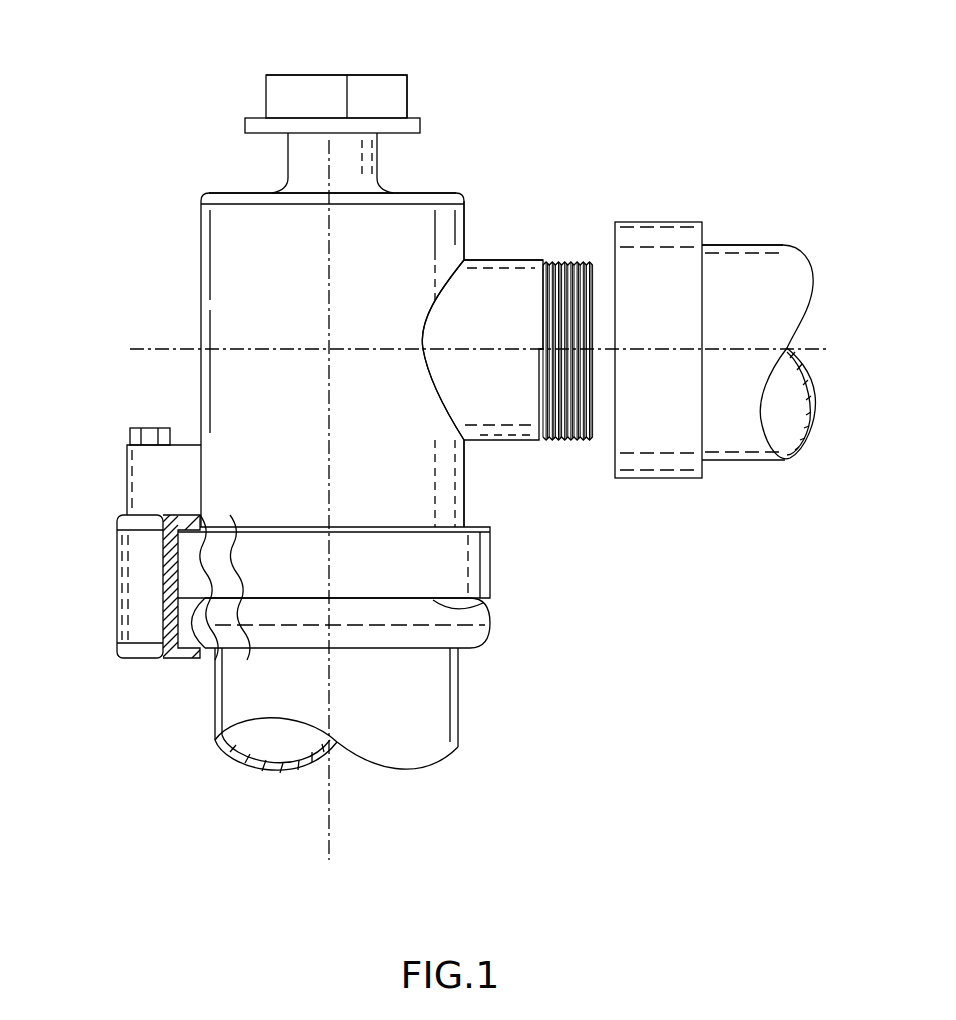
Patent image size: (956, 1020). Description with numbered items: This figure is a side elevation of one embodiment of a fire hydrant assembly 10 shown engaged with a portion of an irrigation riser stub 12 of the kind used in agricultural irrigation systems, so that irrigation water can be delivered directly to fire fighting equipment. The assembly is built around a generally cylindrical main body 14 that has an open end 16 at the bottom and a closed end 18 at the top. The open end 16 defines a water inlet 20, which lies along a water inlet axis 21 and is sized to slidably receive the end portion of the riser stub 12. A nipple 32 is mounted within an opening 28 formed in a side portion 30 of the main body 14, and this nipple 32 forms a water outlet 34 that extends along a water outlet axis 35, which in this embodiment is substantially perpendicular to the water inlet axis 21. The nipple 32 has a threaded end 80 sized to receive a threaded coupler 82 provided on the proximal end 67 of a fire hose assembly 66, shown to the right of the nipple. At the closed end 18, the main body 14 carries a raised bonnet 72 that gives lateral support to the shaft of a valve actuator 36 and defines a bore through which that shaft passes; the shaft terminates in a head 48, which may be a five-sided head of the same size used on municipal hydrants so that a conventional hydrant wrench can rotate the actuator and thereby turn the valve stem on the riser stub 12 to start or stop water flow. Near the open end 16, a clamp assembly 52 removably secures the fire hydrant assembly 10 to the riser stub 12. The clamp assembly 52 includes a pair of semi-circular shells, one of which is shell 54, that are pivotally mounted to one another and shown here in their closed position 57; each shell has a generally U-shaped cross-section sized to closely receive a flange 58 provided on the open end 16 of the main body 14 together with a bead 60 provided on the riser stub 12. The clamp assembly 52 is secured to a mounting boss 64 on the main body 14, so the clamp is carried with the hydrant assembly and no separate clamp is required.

The fire hydrant assembly 10 is at (137, 132).
The irrigation riser stub 12 is at (265, 775).
The main body 14 is at (200, 258).
The open end 16 is at (492, 582).
The closed end 18 is at (225, 190).
The water inlet 20 is at (490, 600).
The water inlet axis 21 is at (330, 826).
The opening 28 is at (448, 398).
The side portion 30 is at (464, 238).
The nipple 32 is at (510, 442).
The water outlet 34 is at (512, 258).
The water outlet axis 35 is at (133, 349).
The valve actuator 36 is at (383, 70).
The head 48 is at (407, 100).
The clamp assembly 52 is at (115, 656).
The shell 54 is at (237, 663).
The closed position 57 is at (197, 660).
The flange 58 is at (474, 525).
The bead 60 is at (488, 630).
The mounting boss 64 is at (127, 462).
The fire hose assembly 66 is at (778, 243).
The proximal end 67 is at (733, 244).
The raised bonnet 72 is at (377, 160).
The threaded end 80 is at (582, 440).
The threaded coupler 82 is at (650, 480).